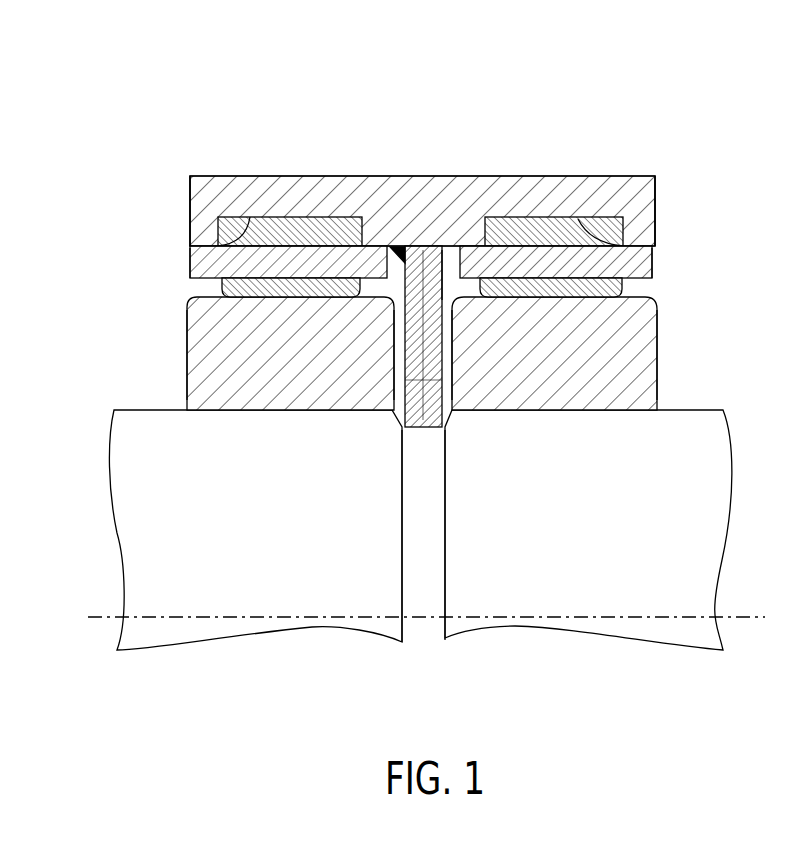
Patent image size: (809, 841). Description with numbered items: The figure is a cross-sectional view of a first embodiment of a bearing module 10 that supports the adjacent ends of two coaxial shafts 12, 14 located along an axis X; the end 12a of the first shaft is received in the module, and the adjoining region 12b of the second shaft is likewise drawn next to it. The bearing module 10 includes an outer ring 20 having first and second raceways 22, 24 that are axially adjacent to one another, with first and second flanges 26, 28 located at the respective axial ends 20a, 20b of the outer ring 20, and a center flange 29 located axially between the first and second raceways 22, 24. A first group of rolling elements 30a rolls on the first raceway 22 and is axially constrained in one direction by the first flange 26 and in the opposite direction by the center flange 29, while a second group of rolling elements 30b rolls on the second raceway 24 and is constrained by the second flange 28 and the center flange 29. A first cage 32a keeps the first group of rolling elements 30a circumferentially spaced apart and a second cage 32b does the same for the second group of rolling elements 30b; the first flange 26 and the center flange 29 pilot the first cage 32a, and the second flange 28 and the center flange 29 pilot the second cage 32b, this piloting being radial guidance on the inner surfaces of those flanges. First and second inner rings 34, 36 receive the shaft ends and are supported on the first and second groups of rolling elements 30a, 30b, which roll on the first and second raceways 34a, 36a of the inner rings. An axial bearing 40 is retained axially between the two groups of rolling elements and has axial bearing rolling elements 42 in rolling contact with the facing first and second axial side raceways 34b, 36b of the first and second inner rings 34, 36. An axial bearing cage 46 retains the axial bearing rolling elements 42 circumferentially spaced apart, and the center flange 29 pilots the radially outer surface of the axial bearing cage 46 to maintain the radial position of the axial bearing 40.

The bearing module 10 is at (182, 129).
The first coaxial shaft 12 is at (270, 535).
The end of first shaft 12a is at (403, 640).
The side wall of second battery cell 12b is at (444, 640).
The second coaxial shaft 14 is at (595, 535).
The outer ring 20 is at (377, 195).
The first axial end of outer ring 20a is at (190, 180).
The second axial end of outer ring 20b is at (655, 183).
The first raceway 22 is at (200, 252).
The second raceway 24 is at (640, 268).
The first flange 26 is at (205, 230).
The second flange 28 is at (645, 230).
The center flange 29 is at (438, 258).
The first group of rolling elements 30a is at (213, 289).
The second group of rolling elements 30b is at (630, 289).
The first cage 32a is at (195, 268).
The second cage 32b is at (652, 272).
The first inner ring 34 is at (298, 367).
The first raceway of first inner ring 34a is at (190, 328).
The first axial side raceway 34b is at (396, 296).
The second inner ring 36 is at (565, 367).
The second raceway of second inner ring 36a is at (482, 252).
The second axial side raceway 36b is at (460, 293).
The axial bearing 40 is at (405, 255).
The axial bearing rolling elements 42 is at (404, 382).
The axial bearing cage 46 is at (428, 267).
The axis X is at (738, 620).